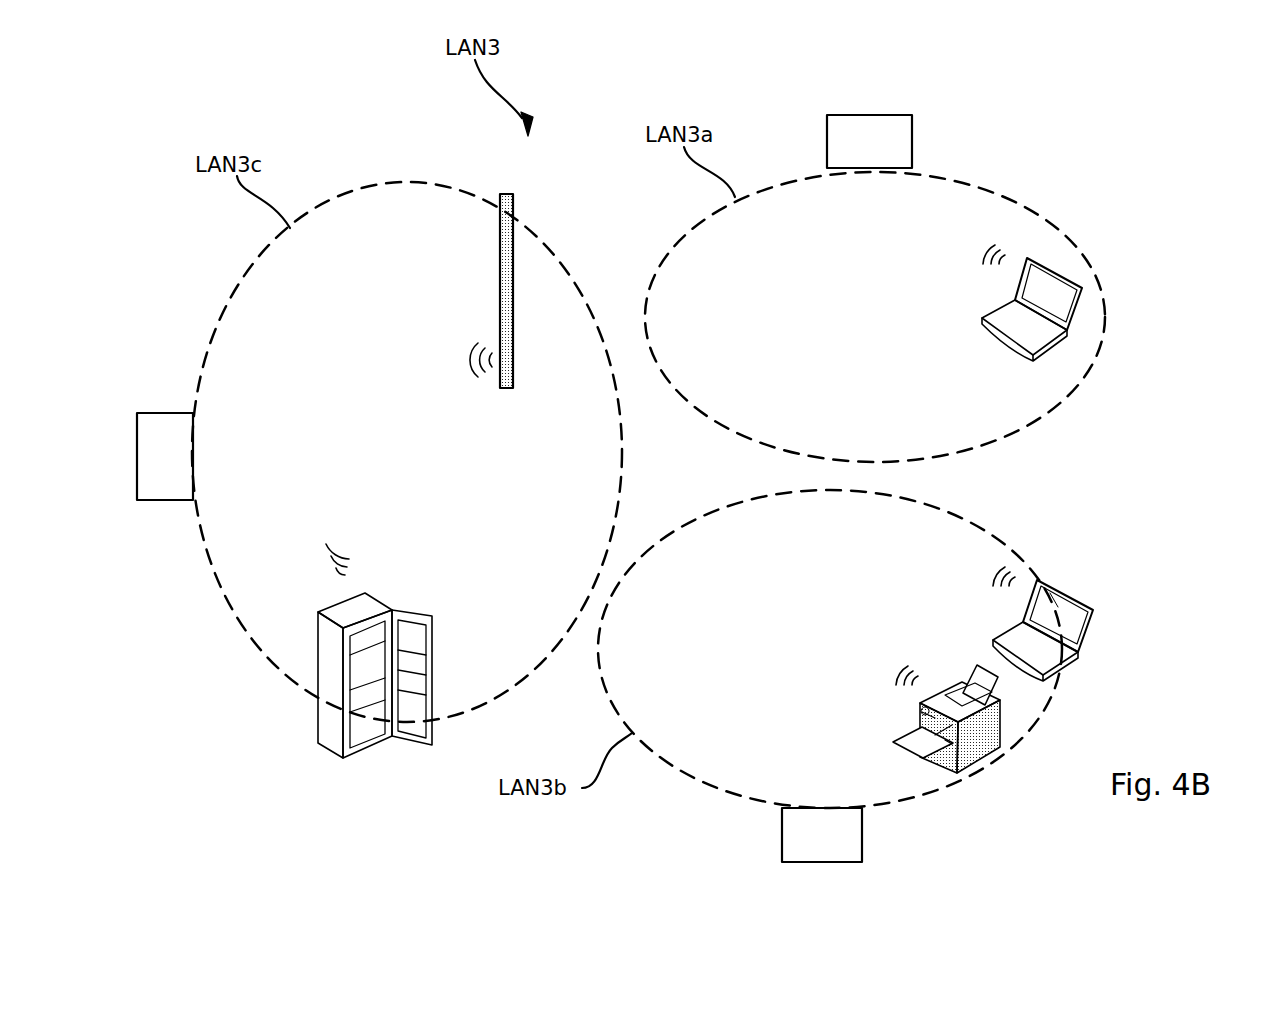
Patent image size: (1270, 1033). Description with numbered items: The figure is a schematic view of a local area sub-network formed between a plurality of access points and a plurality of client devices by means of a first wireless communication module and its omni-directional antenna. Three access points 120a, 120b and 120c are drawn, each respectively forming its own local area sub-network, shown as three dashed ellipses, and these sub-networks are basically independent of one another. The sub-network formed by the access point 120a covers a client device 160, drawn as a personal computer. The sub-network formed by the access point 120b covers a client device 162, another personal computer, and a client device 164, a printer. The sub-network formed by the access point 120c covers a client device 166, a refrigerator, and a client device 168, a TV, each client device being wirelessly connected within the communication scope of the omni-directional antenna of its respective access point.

The access point 120a is at (869, 141).
The access point 120b is at (822, 835).
The access point 120c is at (165, 456).
The client device 160 is at (1058, 268).
The client device 162 is at (1073, 598).
The client device 164 is at (917, 728).
The client device 166 is at (403, 607).
The client device 168 is at (500, 282).